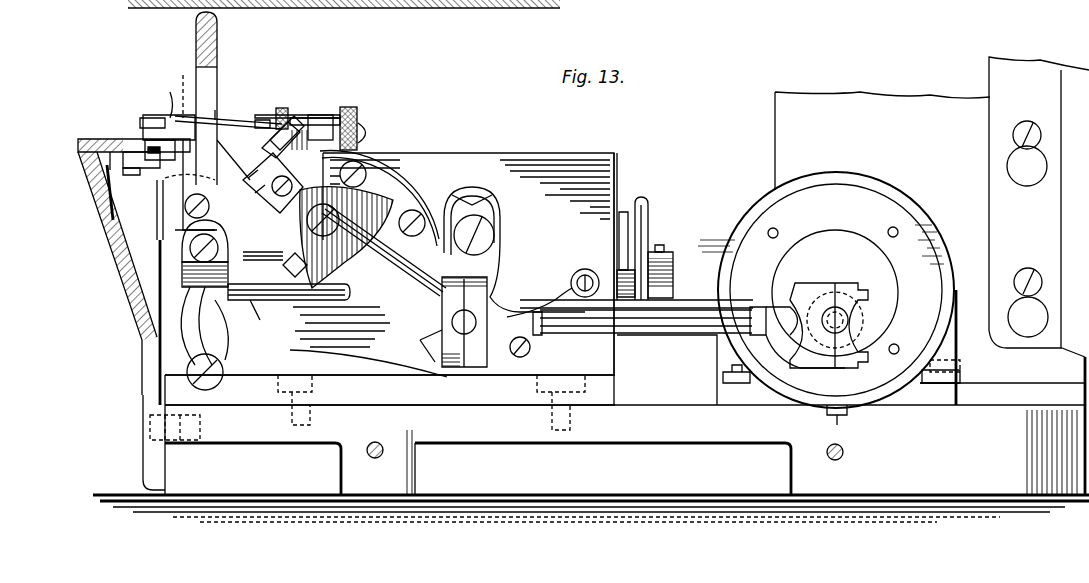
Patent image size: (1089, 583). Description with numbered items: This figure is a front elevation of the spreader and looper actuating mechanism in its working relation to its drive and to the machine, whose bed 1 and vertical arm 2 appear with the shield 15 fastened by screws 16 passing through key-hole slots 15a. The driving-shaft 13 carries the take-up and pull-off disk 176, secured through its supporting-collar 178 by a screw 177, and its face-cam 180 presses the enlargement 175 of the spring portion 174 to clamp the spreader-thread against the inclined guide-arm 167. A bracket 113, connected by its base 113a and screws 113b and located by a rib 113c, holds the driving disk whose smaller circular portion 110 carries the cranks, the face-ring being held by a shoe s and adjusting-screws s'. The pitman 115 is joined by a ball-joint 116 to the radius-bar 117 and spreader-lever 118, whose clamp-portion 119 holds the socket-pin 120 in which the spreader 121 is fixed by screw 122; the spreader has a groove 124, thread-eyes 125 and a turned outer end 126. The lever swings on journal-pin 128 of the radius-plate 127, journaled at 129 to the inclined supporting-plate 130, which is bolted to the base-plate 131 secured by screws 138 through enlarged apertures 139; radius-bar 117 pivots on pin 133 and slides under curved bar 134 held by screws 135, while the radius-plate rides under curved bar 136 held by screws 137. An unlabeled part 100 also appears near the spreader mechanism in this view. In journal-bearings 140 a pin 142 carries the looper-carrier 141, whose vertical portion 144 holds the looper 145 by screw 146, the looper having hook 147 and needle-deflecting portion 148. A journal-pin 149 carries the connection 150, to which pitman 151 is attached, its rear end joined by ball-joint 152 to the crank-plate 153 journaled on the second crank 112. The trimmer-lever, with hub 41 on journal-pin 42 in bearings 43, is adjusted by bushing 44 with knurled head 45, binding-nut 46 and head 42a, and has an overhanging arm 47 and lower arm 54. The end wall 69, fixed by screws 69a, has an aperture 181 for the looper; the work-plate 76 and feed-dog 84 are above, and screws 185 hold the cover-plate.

The bed 1 is at (591, 435).
The vertical arm 2 is at (882, 248).
The driving-shaft 13 is at (636, 292).
The shield 15 is at (1003, 62).
The key-hole slots 15a is at (1030, 178).
The screws 16 is at (1027, 128).
The hub 41 is at (283, 100).
The journal-pin 42 is at (140, 130).
The head 42a is at (372, 120).
The bearings 43 is at (157, 128).
The screw-threaded bushing 44 is at (310, 110).
The knurled head 45 is at (300, 88).
The binding-nut 46 is at (360, 104).
The overhanging arm 47 is at (215, 33).
The lower arm 54 is at (196, 326).
The end wall 69 is at (115, 273).
The screws 69a is at (150, 434).
The work-plate 76 is at (87, 139).
The feed-dog 84 is at (125, 154).
The arm 100 is at (293, 347).
The smaller circular portion 110 is at (835, 293).
The second crank 112 is at (795, 318).
The bracket 113 is at (875, 177).
The base 113a is at (950, 392).
The screws 113b is at (978, 374).
The rib 113c is at (835, 421).
The pitman 115 is at (690, 336).
The ball-joint 116 is at (440, 325).
The radius-bar 117 is at (500, 268).
The spreader-lever 118 is at (415, 278).
The clamp-portion 119 is at (285, 256).
The socket-pin 120 is at (271, 189).
The spreader 121 is at (258, 110).
The screw 122 is at (302, 118).
The groove 124 is at (215, 118).
The thread-eyes 125 is at (190, 68).
The outer end 126 is at (160, 92).
The radius-plate 127 is at (348, 250).
The journal-pin 128 is at (263, 262).
The journal 129 is at (341, 327).
The inclined supporting-plate 130 is at (450, 160).
The base-plate 131 is at (390, 390).
The pin 133 is at (478, 236).
The curved bar 134 is at (560, 293).
The screws 135 is at (572, 284).
The curved bar 136 is at (395, 192).
The screws 137 is at (368, 160).
The screws 138 is at (300, 410).
The enlarged apertures 139 is at (318, 398).
The journal-bearings 140 is at (220, 362).
The looper-carrier 141 is at (175, 320).
The pin 142 is at (215, 377).
The vertical portion 144 is at (180, 212).
The looper 145 is at (170, 192).
The screw 146 is at (190, 238).
The hook 147 is at (150, 143).
The needle-deflecting portion 148 is at (226, 178).
The journal-pin 149 is at (182, 250).
The connection 150 is at (203, 260).
The pitman 151 is at (490, 308).
The ball-joint 152 is at (850, 322).
The crank-plate 153 is at (855, 368).
The inclined guide-arm 167 is at (626, 212).
The spring portion 174 is at (625, 228).
The enlargement 175 is at (630, 250).
The take-up and pull-off disk 176 is at (650, 215).
The screw 177 is at (660, 247).
The supporting-collar 178 is at (672, 256).
The face-cam 180 is at (641, 210).
The aperture 181 is at (97, 207).
The screws 185 is at (378, 442).
The shoe s is at (949, 351).
The adjusting-screws s' is at (954, 362).